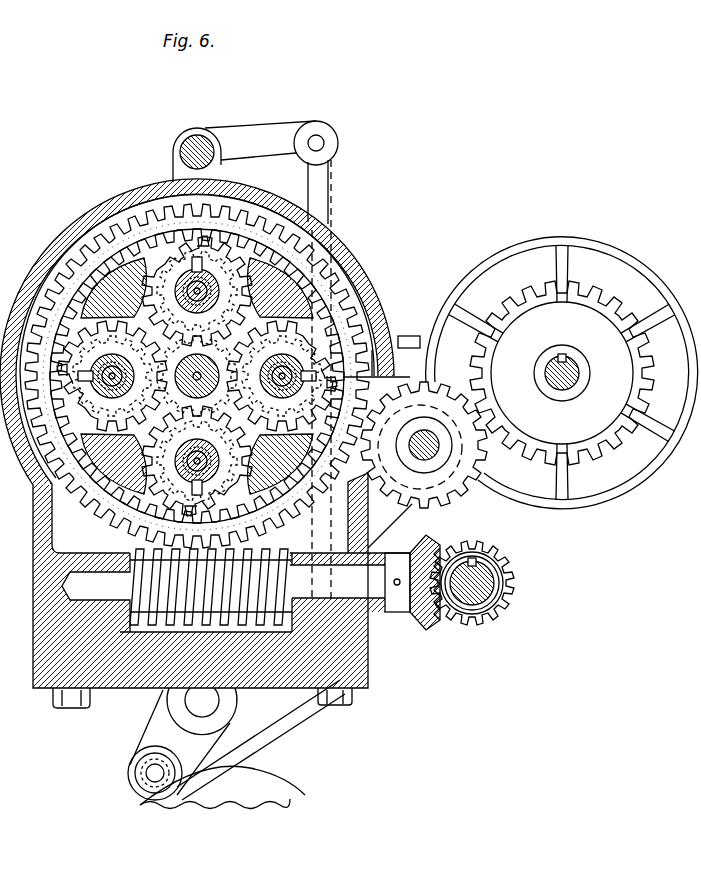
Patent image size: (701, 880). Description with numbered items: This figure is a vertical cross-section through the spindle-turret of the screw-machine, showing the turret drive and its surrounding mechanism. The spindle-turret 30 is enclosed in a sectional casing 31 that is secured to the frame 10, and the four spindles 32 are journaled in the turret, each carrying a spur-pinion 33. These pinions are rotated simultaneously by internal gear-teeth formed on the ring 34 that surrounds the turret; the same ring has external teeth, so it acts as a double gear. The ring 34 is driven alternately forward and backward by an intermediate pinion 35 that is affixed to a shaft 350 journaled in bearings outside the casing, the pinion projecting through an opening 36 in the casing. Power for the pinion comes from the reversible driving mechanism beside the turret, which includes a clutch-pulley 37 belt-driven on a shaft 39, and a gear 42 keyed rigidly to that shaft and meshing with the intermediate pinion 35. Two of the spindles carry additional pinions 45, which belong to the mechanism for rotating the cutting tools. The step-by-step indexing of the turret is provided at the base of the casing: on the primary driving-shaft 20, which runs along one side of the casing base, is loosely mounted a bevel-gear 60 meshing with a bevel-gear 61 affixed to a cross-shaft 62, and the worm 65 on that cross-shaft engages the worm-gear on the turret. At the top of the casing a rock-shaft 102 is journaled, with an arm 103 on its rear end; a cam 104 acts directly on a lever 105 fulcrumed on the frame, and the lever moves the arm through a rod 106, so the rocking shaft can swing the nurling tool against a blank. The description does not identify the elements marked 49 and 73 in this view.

The frame 10 is at (368, 686).
The primary driving-shaft 20 is at (517, 585).
The spindle-turret 30 is at (197, 376).
The sectional casing 31 is at (336, 252).
The spindles 32 is at (160, 217).
The spur-pinions 33 is at (112, 232).
The ring 34 is at (75, 258).
The intermediate pinion 35 is at (470, 482).
The opening 36 is at (406, 336).
The clutch-pulley 37 is at (605, 503).
The shaft 39 is at (562, 392).
The gear 42 is at (525, 300).
The additional pinions 45 is at (335, 190).
The internal teeth 49 is at (177, 233).
The bevel-gear 60 is at (505, 606).
The bevel-gear 61 is at (427, 632).
The cross-shaft 62 is at (375, 612).
The worm 65 is at (130, 655).
The sun shaft 73 is at (218, 356).
The rock-shaft 102 is at (200, 140).
The arm 103 is at (262, 125).
The cam 104 is at (298, 790).
The lever 105 is at (290, 717).
The rod 106 is at (312, 210).
The shaft 350 is at (424, 462).